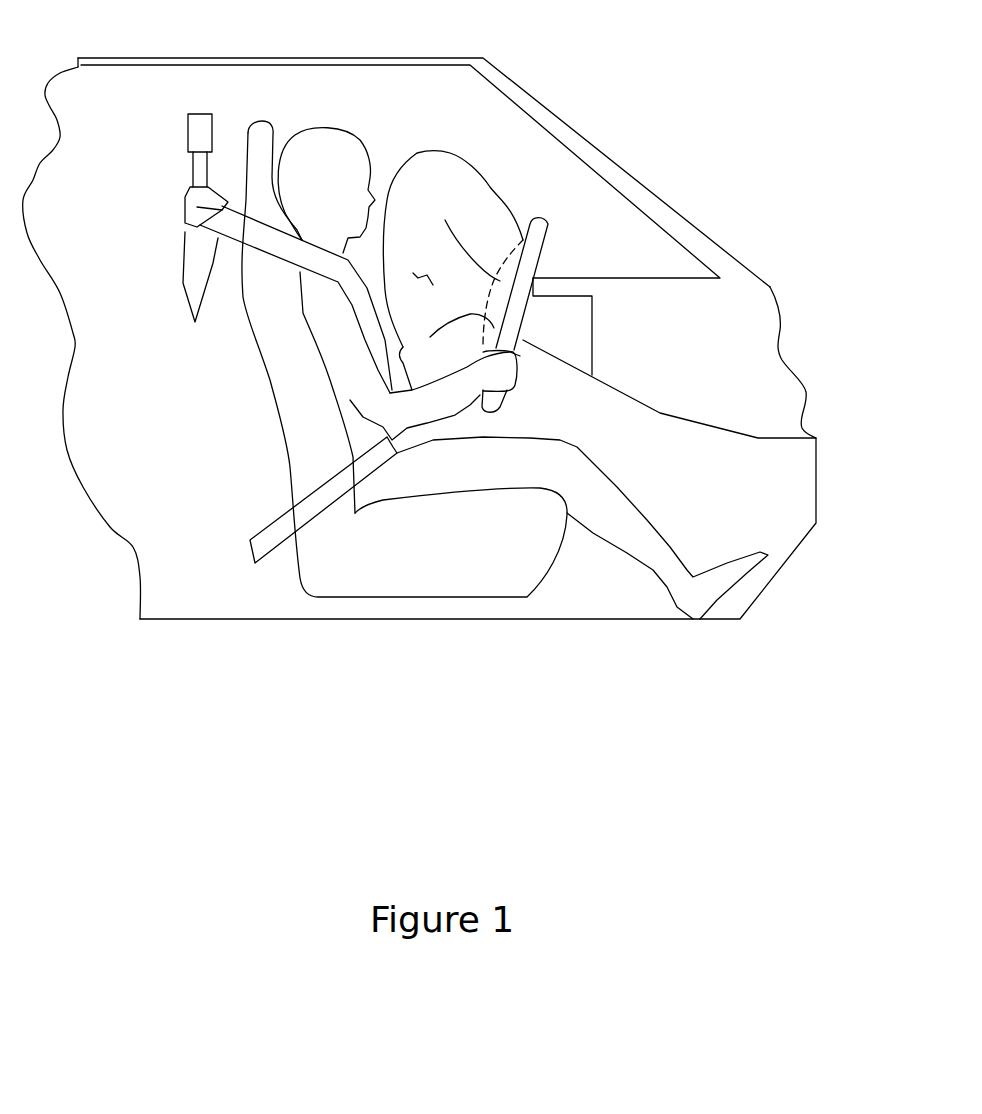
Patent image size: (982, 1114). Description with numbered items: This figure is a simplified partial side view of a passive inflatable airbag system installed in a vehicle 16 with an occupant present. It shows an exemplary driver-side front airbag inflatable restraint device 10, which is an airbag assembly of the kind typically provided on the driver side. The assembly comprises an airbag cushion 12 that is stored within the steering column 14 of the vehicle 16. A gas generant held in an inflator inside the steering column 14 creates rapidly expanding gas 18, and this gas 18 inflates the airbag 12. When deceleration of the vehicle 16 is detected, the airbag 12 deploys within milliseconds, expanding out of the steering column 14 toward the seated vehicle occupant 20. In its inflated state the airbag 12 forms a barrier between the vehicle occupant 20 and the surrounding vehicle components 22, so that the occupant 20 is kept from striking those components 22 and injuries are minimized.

The driver-side front airbag inflatable restraint device 10 is at (519, 217).
The airbag cushion 12 is at (448, 153).
The steering column 14 is at (553, 295).
The vehicle 16 is at (748, 263).
The rapidly expanding gas 18 is at (477, 213).
The vehicle occupant 20 is at (420, 470).
The vehicle components 22 is at (545, 324).